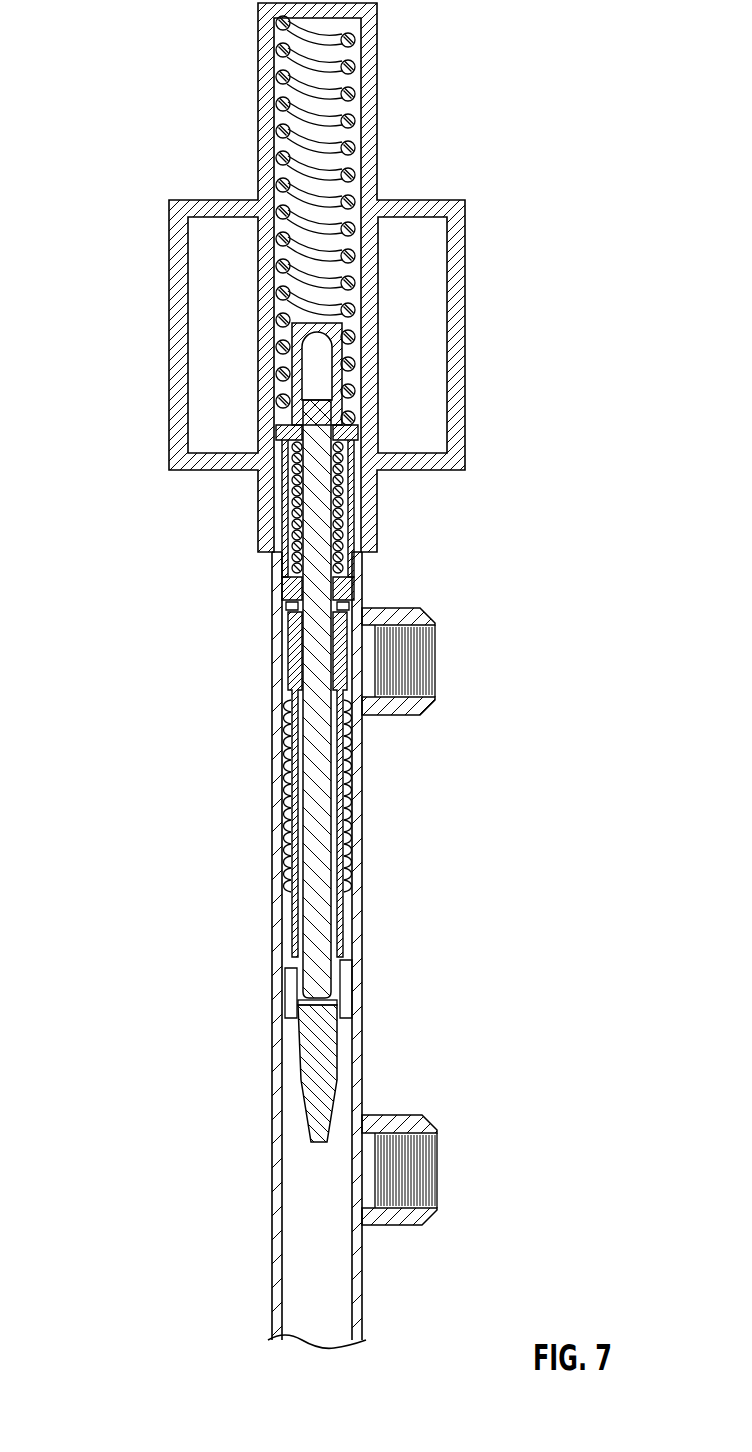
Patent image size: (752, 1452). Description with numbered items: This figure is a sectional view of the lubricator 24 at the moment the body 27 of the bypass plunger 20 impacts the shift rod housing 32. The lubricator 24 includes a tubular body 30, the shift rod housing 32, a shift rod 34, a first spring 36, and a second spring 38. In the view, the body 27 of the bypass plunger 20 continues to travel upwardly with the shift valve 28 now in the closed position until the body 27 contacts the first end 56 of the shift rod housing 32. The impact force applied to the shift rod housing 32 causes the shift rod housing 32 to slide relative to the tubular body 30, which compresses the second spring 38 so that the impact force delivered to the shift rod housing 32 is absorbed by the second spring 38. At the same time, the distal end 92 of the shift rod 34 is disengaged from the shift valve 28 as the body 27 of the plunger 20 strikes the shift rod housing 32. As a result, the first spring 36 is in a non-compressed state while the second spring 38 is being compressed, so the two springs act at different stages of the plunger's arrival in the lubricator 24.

The lubricator 24 is at (121, 118).
The second spring 38 is at (357, 148).
The shift rod 34 is at (318, 872).
The shift rod housing 32 is at (285, 577).
The first spring 36 is at (342, 558).
The first end 56 is at (285, 608).
The body 27 is at (288, 690).
The tubular body 30 is at (362, 803).
The bypass plunger 20 is at (353, 870).
The distal end 92 is at (322, 1001).
The shift valve 28 is at (292, 1033).